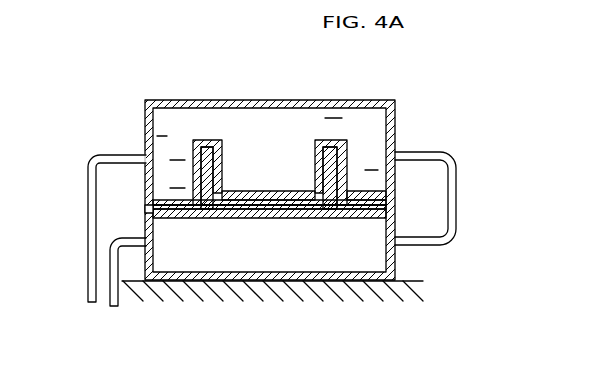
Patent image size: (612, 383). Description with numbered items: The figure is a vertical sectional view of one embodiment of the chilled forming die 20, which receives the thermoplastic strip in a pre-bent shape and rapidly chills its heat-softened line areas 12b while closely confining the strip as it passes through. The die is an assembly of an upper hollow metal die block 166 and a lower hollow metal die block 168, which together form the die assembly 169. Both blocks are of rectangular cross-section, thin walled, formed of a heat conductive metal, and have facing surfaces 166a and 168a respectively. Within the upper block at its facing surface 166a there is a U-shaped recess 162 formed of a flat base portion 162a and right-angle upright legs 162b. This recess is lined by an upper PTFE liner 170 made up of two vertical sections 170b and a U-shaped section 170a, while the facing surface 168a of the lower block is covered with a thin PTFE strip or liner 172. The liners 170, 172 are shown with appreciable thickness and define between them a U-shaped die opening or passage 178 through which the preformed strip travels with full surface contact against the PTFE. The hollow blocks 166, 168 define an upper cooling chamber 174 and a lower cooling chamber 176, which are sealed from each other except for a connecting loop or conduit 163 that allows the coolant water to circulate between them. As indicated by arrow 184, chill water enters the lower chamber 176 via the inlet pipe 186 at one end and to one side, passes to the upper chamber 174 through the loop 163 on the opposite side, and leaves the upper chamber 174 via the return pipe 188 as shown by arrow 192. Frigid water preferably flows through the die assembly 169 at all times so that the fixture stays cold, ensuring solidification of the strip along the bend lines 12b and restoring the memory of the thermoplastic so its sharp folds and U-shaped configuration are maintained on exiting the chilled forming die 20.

The chilled forming die 20 is at (248, 212).
The upper hollow metal die block 166 is at (399, 110).
The facing surface of upper block 166a is at (152, 190).
The die assembly 169 is at (146, 210).
The upper cooling chamber 174 is at (303, 132).
The lower cooling chamber 176 is at (284, 261).
The U-shaped recess 162 is at (246, 191).
The flat base portion 162a is at (282, 196).
The upright legs 162b is at (382, 176).
The upper PTFE liner 170 is at (281, 212).
The U-shaped section 170a is at (222, 190).
The vertical sections 170b is at (205, 147).
The PTFE strip or liner 172 is at (311, 214).
The U-shaped die opening or passage 178 is at (212, 222).
The lower hollow metal die block 168 is at (386, 290).
The facing surface of lower block 168a is at (241, 214).
The heat-softened line areas 12b is at (328, 220).
The connecting loop or conduit 163 is at (452, 248).
The return pipe 188 is at (87, 276).
The arrow 192 is at (91, 312).
The inlet pipe 186 is at (118, 294).
The arrow 184 is at (114, 312).